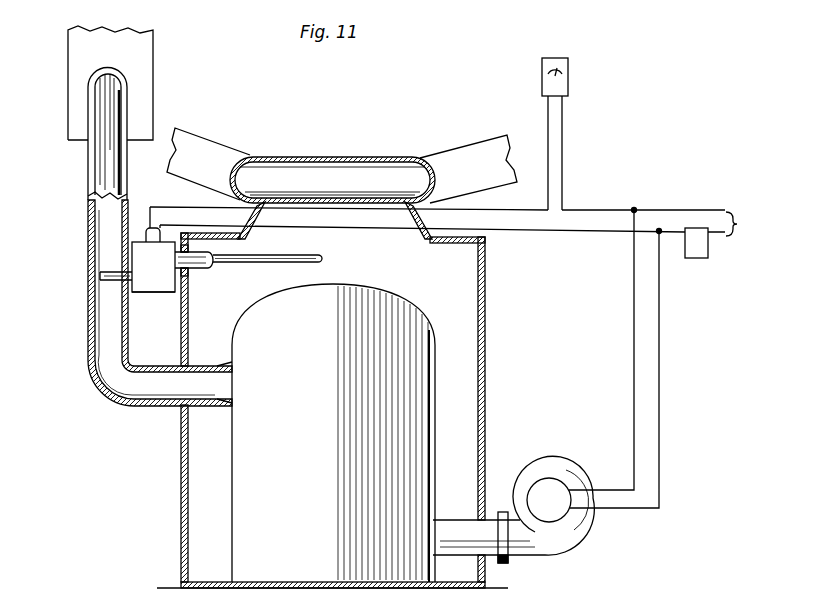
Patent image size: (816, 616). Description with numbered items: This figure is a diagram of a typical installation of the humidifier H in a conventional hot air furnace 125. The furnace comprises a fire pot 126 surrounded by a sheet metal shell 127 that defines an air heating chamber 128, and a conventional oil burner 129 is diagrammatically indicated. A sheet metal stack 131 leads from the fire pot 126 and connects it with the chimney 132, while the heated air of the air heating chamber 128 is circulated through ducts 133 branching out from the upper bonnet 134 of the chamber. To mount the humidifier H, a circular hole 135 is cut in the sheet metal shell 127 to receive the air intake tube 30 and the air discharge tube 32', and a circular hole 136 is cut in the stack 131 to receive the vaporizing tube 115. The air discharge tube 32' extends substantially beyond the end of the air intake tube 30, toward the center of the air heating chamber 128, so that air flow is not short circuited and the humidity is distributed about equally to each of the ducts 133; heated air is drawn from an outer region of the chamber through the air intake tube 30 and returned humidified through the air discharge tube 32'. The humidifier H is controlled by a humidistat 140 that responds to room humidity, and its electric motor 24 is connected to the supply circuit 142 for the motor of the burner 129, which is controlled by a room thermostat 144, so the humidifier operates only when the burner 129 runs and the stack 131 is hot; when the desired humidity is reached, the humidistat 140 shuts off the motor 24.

The chimney 132 is at (75, 103).
The stack 131 is at (96, 366).
The ducts 133 is at (206, 146).
The upper bonnet 134 is at (324, 158).
The electric motor 24 is at (152, 226).
The vaporizing tube 115 is at (106, 272).
The circular hole 136 is at (125, 281).
The air intake tube 30 is at (216, 268).
The air discharge tube 32' is at (297, 261).
The circular hole 135 is at (192, 278).
The furnace 125 is at (301, 395).
The fire pot 126 is at (258, 490).
The sheet metal shell 127 is at (180, 518).
The air heating chamber 128 is at (208, 553).
The oil burner 129 is at (553, 469).
The humidistat 140 is at (549, 57).
The supply circuit 142 is at (460, 357).
The room thermostat 144 is at (697, 259).
The humidifier H is at (153, 297).